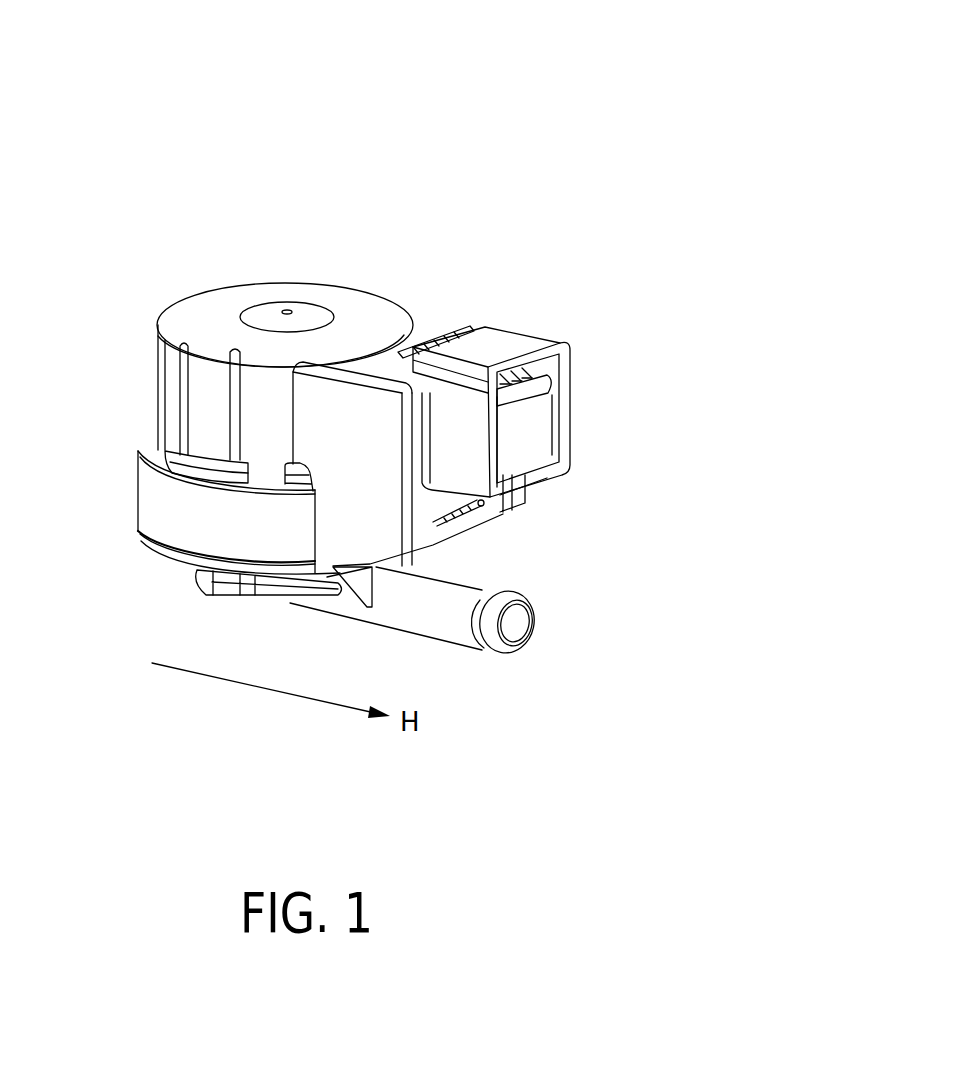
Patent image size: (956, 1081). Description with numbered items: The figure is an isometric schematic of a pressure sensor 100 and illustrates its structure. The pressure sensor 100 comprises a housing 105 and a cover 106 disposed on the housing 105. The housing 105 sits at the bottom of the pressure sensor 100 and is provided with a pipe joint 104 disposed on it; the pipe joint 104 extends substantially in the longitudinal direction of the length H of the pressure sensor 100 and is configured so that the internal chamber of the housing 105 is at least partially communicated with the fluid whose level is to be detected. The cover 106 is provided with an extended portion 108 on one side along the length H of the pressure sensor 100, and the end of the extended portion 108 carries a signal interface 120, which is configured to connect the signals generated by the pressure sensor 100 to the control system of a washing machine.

The pressure sensor 100 is at (568, 118).
The pipe joint 104 is at (450, 633).
The housing 105 is at (140, 528).
The cover 106 is at (167, 390).
The extended portion 108 is at (440, 327).
The signal interface 120 is at (533, 430).